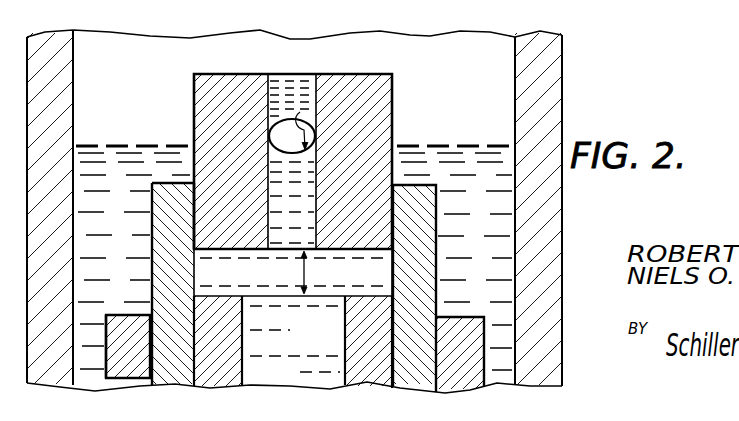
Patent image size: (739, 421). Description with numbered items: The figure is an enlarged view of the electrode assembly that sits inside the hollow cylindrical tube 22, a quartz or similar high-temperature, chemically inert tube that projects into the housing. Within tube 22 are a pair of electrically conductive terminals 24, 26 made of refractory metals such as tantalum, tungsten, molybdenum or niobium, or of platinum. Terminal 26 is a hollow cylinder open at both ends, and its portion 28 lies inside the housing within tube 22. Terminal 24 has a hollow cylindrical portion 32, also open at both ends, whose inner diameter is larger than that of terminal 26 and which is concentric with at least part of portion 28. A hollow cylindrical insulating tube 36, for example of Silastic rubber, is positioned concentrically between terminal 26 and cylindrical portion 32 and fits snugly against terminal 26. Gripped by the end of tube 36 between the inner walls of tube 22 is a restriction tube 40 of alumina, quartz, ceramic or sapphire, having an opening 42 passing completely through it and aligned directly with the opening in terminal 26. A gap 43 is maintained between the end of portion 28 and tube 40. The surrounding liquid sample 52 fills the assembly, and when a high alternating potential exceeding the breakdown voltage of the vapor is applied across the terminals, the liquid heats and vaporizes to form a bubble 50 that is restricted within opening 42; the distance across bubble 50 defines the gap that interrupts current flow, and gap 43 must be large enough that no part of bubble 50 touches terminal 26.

The hollow cylindrical tube 22 is at (565, 63).
The electrically conductive terminal 24 is at (112, 315).
The electrically conductive terminal 26 is at (390, 320).
The portion of terminal 28 is at (350, 332).
The hollow cylindrical portion 32 is at (134, 320).
The insulating tube 36 is at (430, 223).
The tube 40 is at (393, 89).
The opening 42 is at (286, 237).
The gap 43 is at (307, 272).
The bubble 50 is at (290, 119).
The liquid sample 52 is at (127, 145).